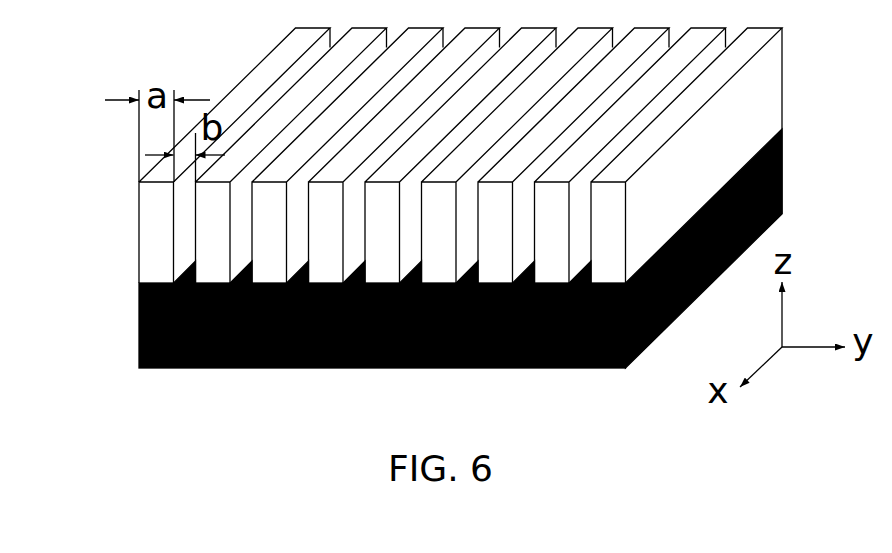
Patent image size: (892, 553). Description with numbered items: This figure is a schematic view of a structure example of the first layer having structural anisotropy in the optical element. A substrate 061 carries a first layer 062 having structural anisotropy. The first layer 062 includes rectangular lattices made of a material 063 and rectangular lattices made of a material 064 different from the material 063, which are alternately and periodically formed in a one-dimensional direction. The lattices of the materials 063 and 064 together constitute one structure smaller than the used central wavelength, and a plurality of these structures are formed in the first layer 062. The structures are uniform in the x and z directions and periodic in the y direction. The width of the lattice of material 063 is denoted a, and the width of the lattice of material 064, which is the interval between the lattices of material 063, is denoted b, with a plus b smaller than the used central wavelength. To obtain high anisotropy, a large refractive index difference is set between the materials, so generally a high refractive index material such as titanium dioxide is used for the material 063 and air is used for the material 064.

The substrate 061 is at (139, 329).
The first layer having structural anisotropy 062 is at (410, 155).
The material of the rectangular lattice 063 is at (272, 192).
The material different from material 063 064 is at (298, 190).